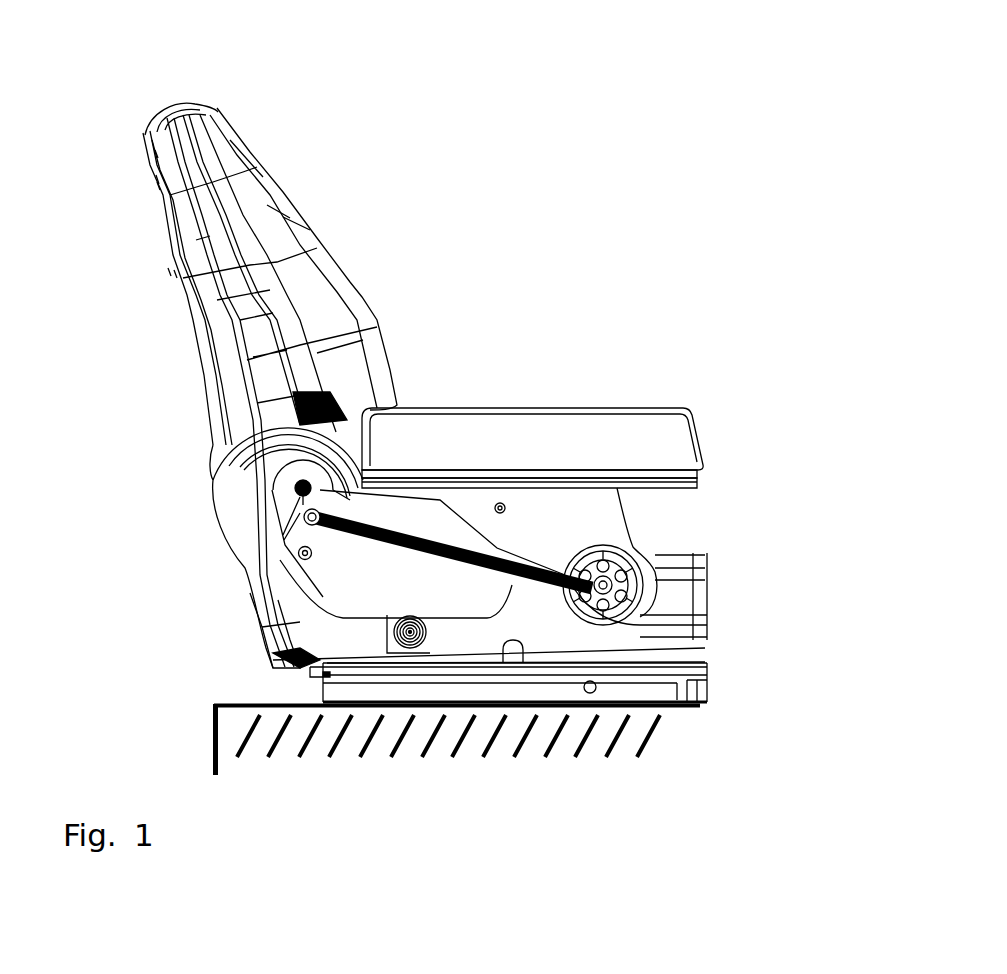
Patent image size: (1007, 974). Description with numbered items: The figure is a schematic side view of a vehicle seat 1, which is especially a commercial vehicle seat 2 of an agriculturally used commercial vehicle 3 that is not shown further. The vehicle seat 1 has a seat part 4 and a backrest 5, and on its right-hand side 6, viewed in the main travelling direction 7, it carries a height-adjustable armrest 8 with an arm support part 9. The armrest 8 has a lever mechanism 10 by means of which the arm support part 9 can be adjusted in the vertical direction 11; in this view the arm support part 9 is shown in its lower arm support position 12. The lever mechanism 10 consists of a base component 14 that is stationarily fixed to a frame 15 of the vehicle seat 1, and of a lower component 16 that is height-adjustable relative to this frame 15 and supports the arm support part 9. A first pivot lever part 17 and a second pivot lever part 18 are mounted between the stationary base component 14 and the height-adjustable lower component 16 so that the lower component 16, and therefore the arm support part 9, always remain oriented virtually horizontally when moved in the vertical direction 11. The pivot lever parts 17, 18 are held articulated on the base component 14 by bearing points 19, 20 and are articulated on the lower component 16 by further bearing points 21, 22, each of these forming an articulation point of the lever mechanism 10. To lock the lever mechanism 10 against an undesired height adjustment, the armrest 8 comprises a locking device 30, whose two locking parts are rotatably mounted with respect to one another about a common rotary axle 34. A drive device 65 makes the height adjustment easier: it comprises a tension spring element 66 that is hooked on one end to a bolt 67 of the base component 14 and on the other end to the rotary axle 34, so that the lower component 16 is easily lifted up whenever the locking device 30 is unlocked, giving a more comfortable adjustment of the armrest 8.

The vehicle seat 1 is at (678, 146).
The commercial vehicle seat 2 is at (497, 163).
The commercial vehicle 3 is at (215, 712).
The seat part 4 is at (690, 598).
The backrest 5 is at (260, 207).
The right-hand side 6 is at (160, 528).
The main travelling direction 7 is at (150, 467).
The height-adjustable armrest 8 is at (660, 317).
The arm support part 9 is at (672, 405).
The lever mechanism 10 is at (702, 536).
The vertical direction 11 is at (836, 512).
The lower arm support position 12 is at (778, 367).
The base component 14 is at (337, 642).
The frame 15 is at (307, 673).
The lower component 16 is at (612, 513).
The first pivot lever part 17 is at (500, 640).
The second pivot lever part 18 is at (347, 587).
The bearing point 19 is at (300, 556).
The bearing point 20 is at (397, 647).
The bearing point 21 is at (502, 504).
The bearing point 22 is at (660, 617).
The locking device 30 is at (628, 620).
The rotary axle 34 is at (591, 695).
The drive device 65 is at (291, 514).
The tension spring element 66 is at (422, 523).
The bolt 67 is at (293, 500).